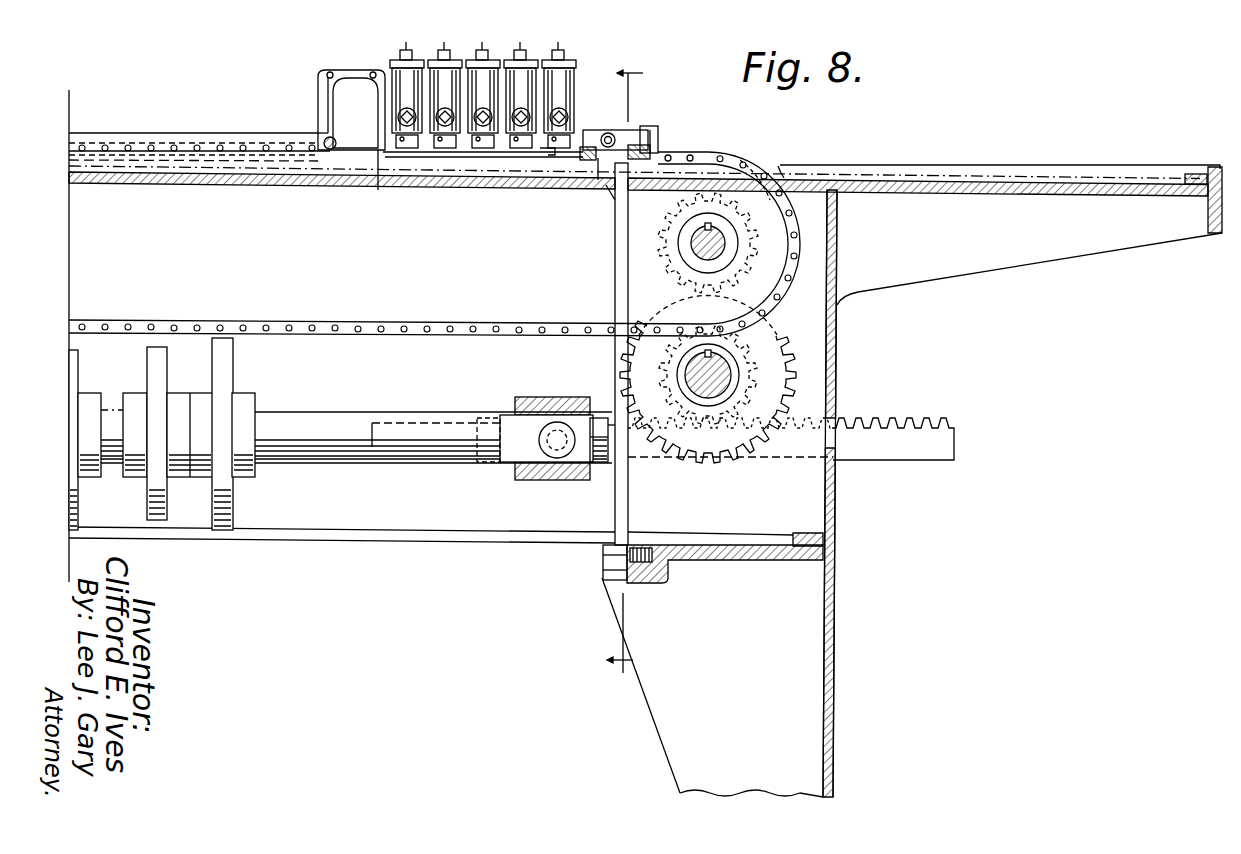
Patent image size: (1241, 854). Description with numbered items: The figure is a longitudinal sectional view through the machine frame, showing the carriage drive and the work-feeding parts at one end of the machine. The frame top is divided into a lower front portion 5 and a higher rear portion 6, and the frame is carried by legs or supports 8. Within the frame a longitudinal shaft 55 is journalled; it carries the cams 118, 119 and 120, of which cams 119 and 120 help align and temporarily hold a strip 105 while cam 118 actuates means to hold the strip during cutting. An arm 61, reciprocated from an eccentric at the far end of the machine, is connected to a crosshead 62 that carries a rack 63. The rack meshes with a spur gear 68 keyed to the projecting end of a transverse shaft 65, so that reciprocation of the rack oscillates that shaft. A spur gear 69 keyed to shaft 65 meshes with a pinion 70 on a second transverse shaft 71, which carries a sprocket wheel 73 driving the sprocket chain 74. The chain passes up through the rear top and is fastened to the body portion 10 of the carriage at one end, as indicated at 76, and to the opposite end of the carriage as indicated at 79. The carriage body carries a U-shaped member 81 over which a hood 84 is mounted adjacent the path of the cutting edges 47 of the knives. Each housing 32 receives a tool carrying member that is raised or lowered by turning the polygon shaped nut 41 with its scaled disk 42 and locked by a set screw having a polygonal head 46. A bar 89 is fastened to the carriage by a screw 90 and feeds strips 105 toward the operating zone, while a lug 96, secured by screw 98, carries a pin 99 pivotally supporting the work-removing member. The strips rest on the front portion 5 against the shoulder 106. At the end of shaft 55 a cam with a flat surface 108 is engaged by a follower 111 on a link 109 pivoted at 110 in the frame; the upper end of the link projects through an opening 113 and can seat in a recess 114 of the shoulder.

The front portion of the top 5 is at (447, 180).
The rear portion of the top 6 is at (836, 168).
The legs or supports 8 is at (835, 663).
The body portion of carriage 10 is at (622, 374).
The housing 32 is at (560, 92).
The polygon shaped nut 41 is at (513, 52).
The disk 42 is at (490, 60).
The polygonal shaped head 46 is at (396, 117).
The cutting edges 47 is at (548, 148).
The shaft 55 is at (357, 423).
The arm 61 is at (427, 437).
The crosshead 62 is at (528, 397).
The rack 63 is at (890, 448).
The shaft 65 is at (780, 380).
The spur gear 68 is at (614, 358).
The spur gear 69 is at (735, 374).
The pinion 70 is at (760, 245).
The shaft 71 is at (695, 243).
The sprocket wheel 73 is at (775, 258).
The sprocket chain 74 is at (497, 322).
The chain attachment point 76 is at (664, 146).
The chain attachment point 79 is at (315, 140).
The U-shaped member 81 is at (320, 86).
The hood 84 is at (329, 89).
The bar 89 is at (270, 138).
The screw 90 is at (378, 188).
The lug 96 is at (642, 134).
The screw 98 is at (608, 132).
The pin 99 is at (660, 127).
The strips 105 is at (308, 165).
The shoulder 106 is at (600, 178).
The flat surface 108 is at (603, 418).
The link 109 is at (625, 503).
The pivot 110 is at (647, 547).
The follower 111 is at (597, 477).
The opening 113 is at (612, 200).
The recess 114 is at (585, 160).
The cam 118 is at (115, 360).
The cam 119 is at (160, 355).
The cam 120 is at (227, 353).